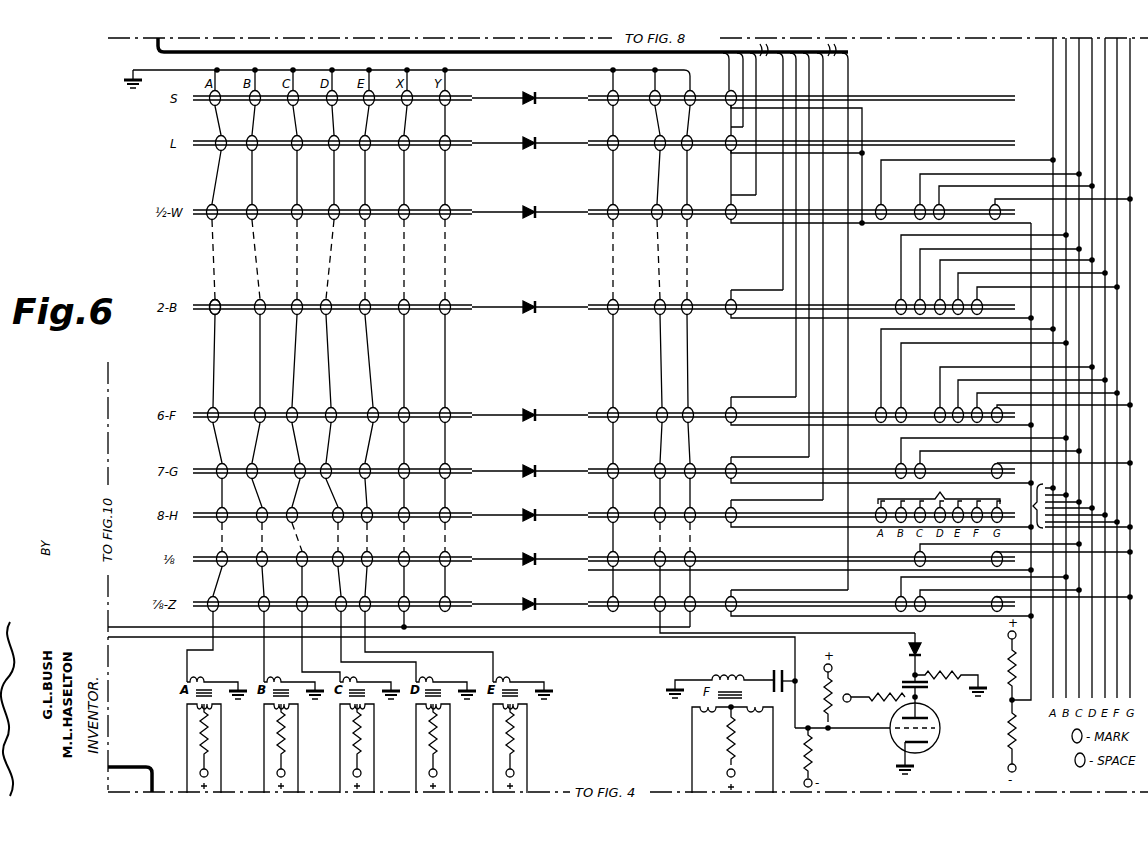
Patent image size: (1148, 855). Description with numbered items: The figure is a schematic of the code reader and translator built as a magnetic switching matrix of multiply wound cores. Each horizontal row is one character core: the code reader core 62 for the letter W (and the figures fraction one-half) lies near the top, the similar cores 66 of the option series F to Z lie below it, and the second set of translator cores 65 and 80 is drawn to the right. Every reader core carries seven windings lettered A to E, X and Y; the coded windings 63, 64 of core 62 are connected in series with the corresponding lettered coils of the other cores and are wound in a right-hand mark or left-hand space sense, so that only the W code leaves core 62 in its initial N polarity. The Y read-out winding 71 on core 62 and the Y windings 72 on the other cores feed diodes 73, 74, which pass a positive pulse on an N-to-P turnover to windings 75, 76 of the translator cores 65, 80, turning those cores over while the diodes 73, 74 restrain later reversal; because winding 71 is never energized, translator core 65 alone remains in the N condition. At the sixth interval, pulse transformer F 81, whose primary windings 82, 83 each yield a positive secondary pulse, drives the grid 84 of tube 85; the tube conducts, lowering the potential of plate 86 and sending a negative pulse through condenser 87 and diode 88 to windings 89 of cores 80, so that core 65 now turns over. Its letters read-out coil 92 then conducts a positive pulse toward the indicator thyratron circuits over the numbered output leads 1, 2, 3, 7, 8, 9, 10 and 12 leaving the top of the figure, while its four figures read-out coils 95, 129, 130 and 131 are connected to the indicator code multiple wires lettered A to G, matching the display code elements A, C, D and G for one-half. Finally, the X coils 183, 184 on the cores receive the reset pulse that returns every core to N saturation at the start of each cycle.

The conductor to FIG. 8 1 is at (724, 71).
The conductor to FIG. 8 2 is at (739, 90).
The conductor to FIG. 8 3 is at (752, 124).
The conductor to FIG. 8 7 is at (779, 171).
The conductor to FIG. 8 is at (792, 225).
The conductor to FIG. 8 9 is at (805, 255).
The conductor to FIG. 8 10 is at (818, 276).
The conductor to FIG. 8 12 is at (844, 321).
The code reader core 62 is at (193, 214).
The coded winding 63 is at (217, 214).
The coded winding 64 is at (217, 308).
The translator core 65 is at (591, 216).
The code reader core 66 is at (192, 602).
The Y winding 71 is at (447, 206).
The Y winding 72 is at (447, 598).
The diode 73 is at (531, 206).
The diode 74 is at (529, 598).
The crosspoint contact 75 is at (617, 206).
The winding 76 is at (617, 600).
The translator core 80 is at (592, 610).
The pulse transformer F 81 is at (768, 687).
The primary winding 82 is at (707, 716).
The primary winding 83 is at (751, 716).
The grid 84 is at (874, 730).
The tube 85 is at (941, 737).
The plate 86 is at (925, 698).
The condenser 87 is at (902, 676).
The diode 88 is at (922, 650).
The winding 89 is at (663, 600).
The letters character read-out coil 92 is at (725, 204).
The figures character read-out coil 95 is at (883, 205).
The figures character read-out coil 129 is at (921, 205).
The figures character read-out coil 130 is at (940, 205).
The figures character read-out coil 131 is at (997, 211).
The X coil 183 is at (405, 599).
The X coil 184 is at (692, 600).